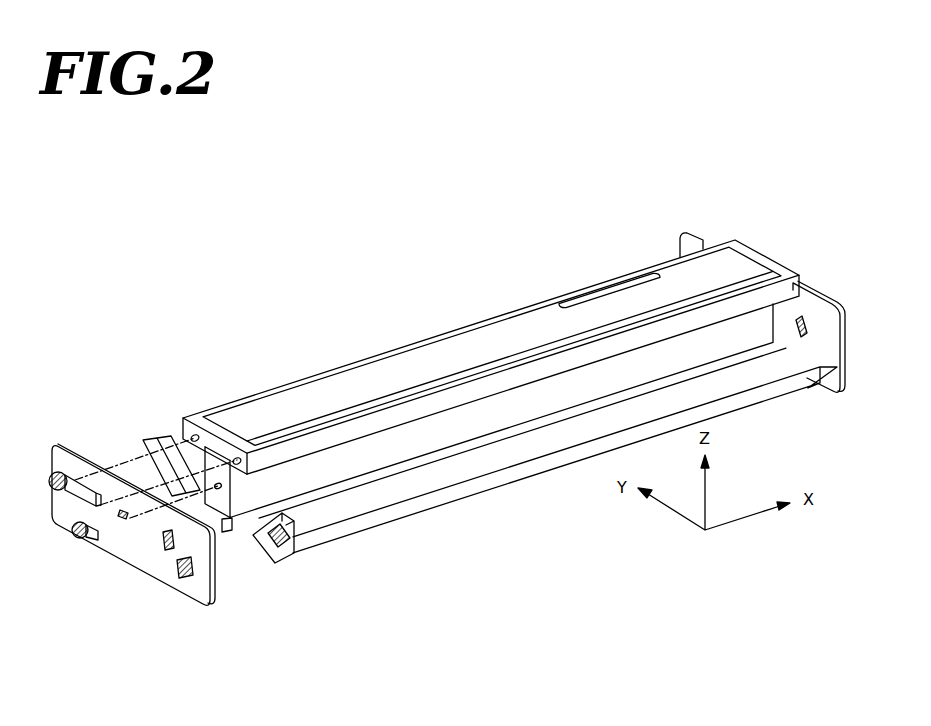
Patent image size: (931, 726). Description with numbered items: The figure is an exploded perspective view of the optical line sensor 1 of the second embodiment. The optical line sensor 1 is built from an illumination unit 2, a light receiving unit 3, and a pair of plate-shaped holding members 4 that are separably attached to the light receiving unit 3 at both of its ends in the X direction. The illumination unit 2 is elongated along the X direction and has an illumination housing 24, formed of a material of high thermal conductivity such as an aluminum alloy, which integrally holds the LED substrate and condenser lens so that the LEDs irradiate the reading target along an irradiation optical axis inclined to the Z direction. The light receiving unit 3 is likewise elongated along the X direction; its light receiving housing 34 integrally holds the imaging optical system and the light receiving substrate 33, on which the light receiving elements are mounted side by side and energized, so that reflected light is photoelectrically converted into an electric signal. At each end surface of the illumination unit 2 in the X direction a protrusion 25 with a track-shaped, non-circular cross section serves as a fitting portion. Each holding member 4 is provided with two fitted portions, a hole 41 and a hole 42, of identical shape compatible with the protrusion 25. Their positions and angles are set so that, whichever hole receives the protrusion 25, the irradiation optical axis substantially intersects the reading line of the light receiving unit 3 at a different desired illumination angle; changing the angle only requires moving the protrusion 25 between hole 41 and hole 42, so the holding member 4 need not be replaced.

The optical line sensor 1 is at (528, 182).
The illumination unit 2 is at (161, 424).
The light receiving unit 3 is at (424, 334).
The holding member 4 is at (124, 566).
The illumination housing 24 is at (443, 497).
The protrusion 25 is at (155, 441).
The light receiving substrate 33 is at (355, 373).
The light receiving housing 34 is at (286, 385).
The hole 41 is at (68, 522).
The hole 42 is at (73, 445).